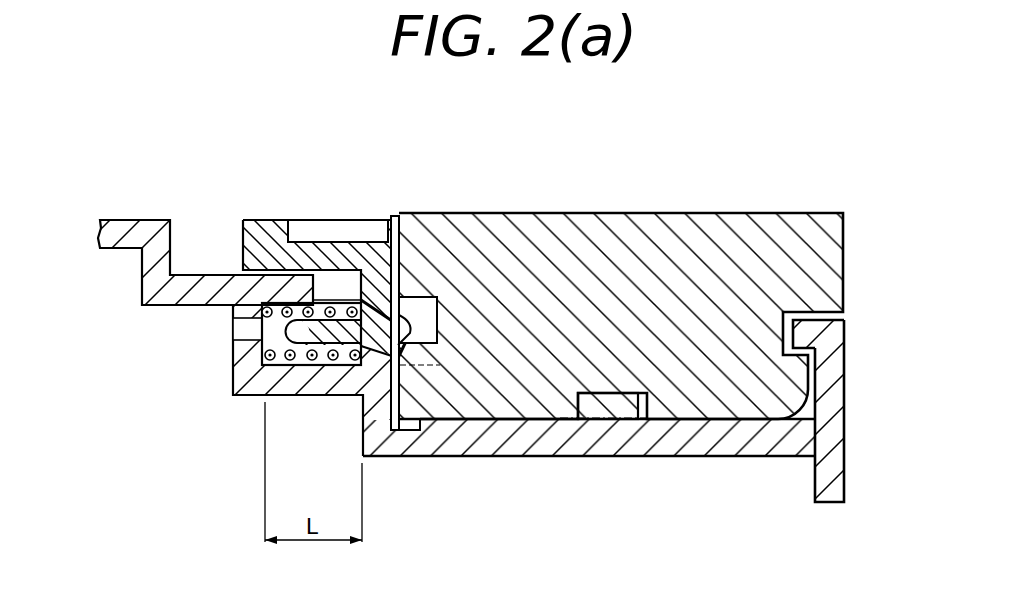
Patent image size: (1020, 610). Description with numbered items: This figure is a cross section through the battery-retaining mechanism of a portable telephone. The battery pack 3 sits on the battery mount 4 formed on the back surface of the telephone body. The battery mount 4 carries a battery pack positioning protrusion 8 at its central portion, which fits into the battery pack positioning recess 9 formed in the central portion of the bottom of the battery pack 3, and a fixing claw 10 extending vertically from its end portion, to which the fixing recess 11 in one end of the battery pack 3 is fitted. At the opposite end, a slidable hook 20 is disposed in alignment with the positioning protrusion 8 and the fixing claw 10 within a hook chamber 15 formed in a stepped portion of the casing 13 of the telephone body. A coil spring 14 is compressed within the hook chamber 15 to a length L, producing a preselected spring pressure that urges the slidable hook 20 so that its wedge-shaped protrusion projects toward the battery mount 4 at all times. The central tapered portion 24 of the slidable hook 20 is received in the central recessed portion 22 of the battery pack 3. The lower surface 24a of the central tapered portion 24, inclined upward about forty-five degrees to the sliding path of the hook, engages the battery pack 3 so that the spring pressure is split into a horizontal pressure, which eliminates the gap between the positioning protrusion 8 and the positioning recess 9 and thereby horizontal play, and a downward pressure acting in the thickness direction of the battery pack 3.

The battery pack 3 is at (582, 223).
The battery mount 4 is at (720, 421).
The battery pack positioning protrusion 8 is at (598, 405).
The battery pack positioning recess 9 is at (612, 392).
The fixing claw 10 is at (818, 334).
The fixing recess 11 is at (806, 316).
The casing 13 is at (148, 258).
The coil spring 14 is at (268, 356).
The hook chamber 15 is at (282, 268).
The slidable hook 20 is at (273, 237).
The central recessed portion 22 is at (375, 290).
The central tapered portion 24 is at (395, 300).
The lower surface 24a is at (388, 415).